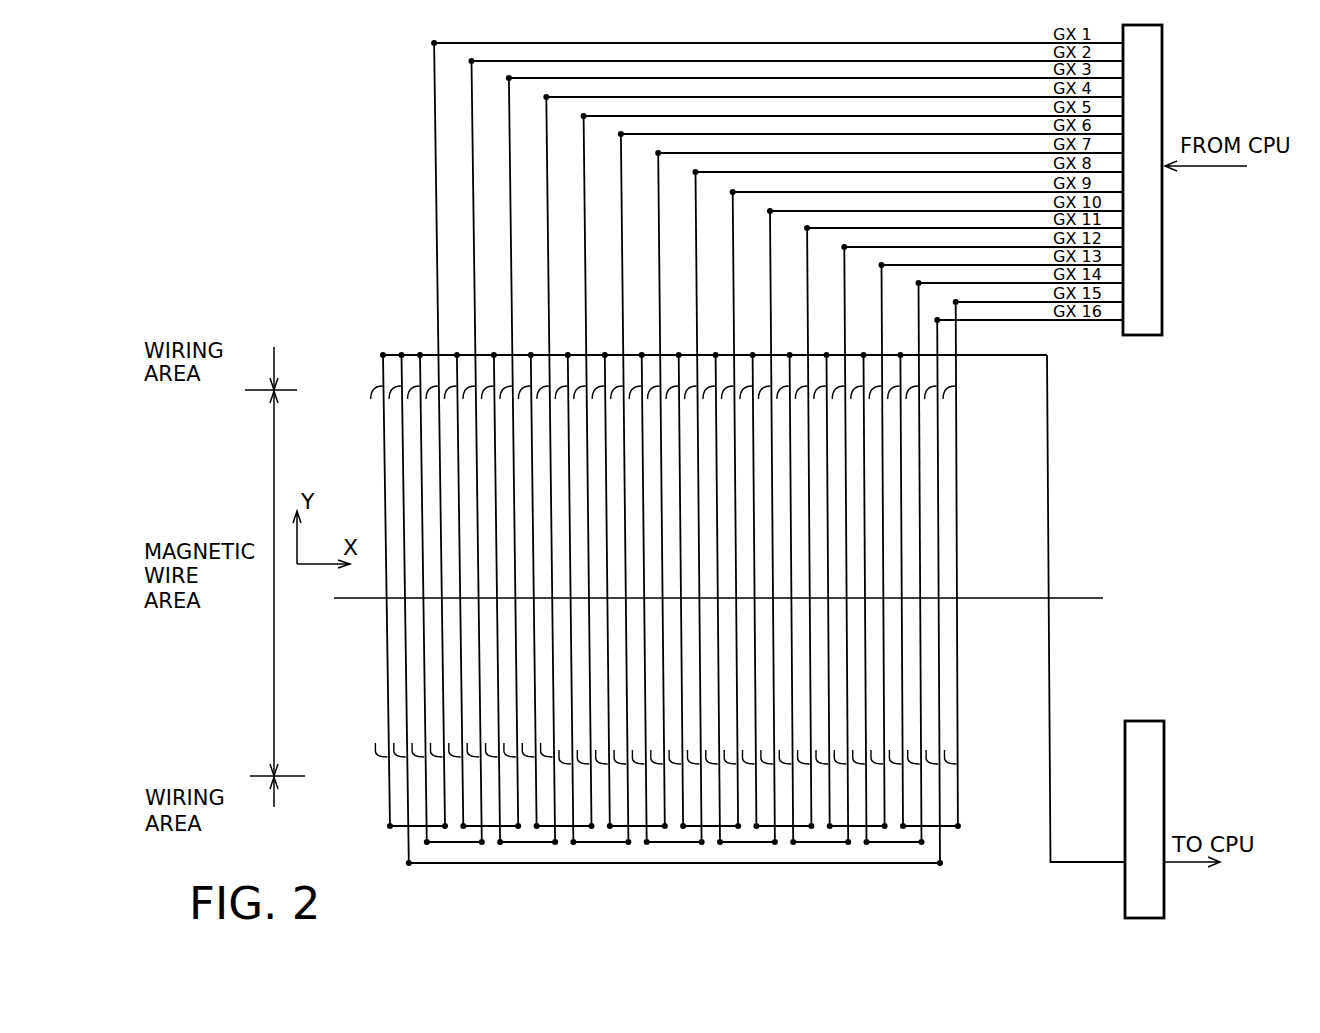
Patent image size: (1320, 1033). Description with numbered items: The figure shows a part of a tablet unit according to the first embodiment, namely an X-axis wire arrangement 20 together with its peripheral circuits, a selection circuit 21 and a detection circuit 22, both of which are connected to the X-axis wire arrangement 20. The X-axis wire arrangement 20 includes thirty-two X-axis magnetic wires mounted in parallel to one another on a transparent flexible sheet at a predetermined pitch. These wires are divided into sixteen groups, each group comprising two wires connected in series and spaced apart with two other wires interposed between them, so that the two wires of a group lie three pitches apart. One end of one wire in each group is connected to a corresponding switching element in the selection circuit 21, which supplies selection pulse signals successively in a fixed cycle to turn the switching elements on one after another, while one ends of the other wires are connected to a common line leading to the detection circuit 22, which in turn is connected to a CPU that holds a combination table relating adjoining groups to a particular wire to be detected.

The X-axis wire arrangement 20 is at (959, 505).
The selection circuit 21 is at (1163, 234).
The detection circuit 22 is at (1165, 760).